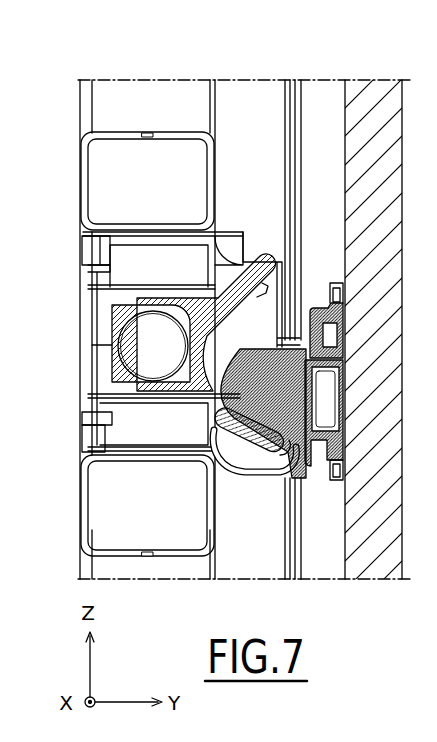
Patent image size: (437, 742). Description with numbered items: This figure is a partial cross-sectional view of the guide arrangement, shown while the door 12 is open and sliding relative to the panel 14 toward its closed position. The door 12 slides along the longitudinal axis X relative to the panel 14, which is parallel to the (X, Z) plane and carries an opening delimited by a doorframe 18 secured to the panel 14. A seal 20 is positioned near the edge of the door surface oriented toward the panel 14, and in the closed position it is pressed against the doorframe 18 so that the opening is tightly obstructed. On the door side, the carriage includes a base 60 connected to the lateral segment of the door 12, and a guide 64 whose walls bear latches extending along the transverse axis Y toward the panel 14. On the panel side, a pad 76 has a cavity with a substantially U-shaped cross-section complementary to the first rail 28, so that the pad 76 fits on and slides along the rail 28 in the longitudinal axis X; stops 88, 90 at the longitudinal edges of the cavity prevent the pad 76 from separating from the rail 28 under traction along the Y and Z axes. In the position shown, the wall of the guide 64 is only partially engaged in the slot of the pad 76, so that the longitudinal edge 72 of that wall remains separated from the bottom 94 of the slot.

The door 12 is at (148, 105).
The panel 14 is at (385, 105).
The doorframe 18 is at (318, 105).
The seal 20 is at (248, 105).
The first rail 28 is at (338, 470).
The base 60 is at (140, 430).
The guide 64 is at (185, 395).
The longitudinal edge 72 is at (253, 427).
The pad 76 is at (283, 402).
The stop 88 is at (345, 333).
The stop 90 is at (332, 428).
The bottom of the slot 94 is at (278, 423).